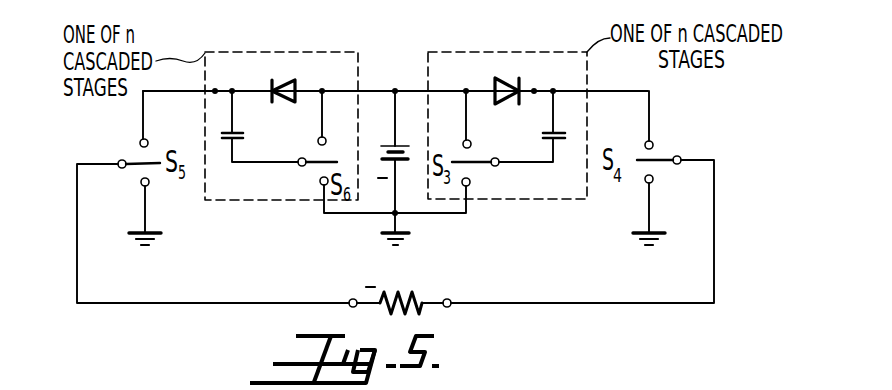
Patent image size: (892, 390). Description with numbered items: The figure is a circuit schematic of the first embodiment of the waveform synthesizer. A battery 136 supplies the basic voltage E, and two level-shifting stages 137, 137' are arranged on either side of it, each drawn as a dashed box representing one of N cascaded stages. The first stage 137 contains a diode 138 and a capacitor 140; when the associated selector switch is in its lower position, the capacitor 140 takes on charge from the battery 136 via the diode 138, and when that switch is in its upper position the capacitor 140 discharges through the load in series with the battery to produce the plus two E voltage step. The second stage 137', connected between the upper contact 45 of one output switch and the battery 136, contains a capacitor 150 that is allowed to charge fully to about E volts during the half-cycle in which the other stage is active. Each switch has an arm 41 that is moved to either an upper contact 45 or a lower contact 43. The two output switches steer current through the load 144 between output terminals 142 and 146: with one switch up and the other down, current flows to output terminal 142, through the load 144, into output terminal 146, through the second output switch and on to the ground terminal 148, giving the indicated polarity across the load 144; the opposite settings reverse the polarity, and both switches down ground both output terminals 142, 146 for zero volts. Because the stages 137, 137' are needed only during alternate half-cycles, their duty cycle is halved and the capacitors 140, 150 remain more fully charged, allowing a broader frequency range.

The level-shifting stage 137 is at (507, 99).
The second stage of level shifting 137' is at (305, 105).
The ground terminal 148 is at (283, 104).
The capacitor 150 is at (228, 140).
The diode 138 is at (511, 104).
The capacitor 140 is at (563, 140).
The battery 136 is at (410, 162).
The switch arm 41 is at (119, 161).
The upper contact 45 is at (148, 142).
The lower contact 43 is at (142, 185).
The output terminal 146 is at (353, 299).
The load 144 is at (402, 291).
The output terminal 142 is at (449, 307).